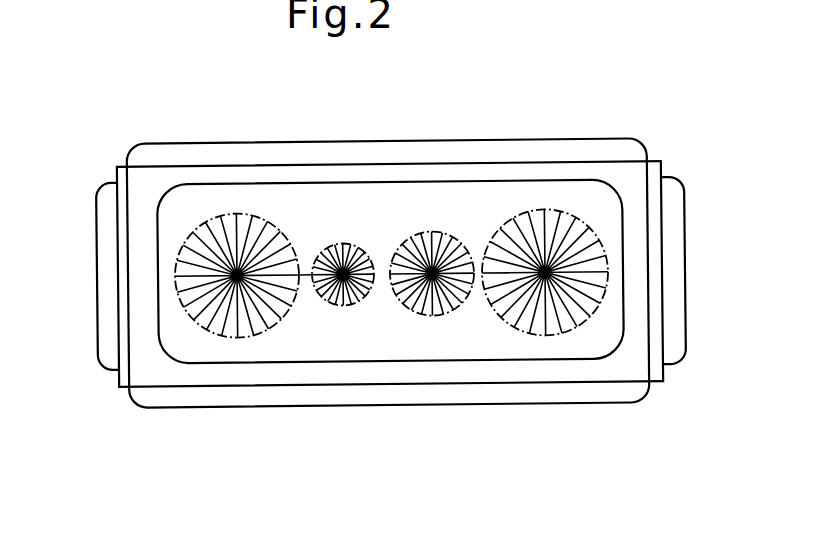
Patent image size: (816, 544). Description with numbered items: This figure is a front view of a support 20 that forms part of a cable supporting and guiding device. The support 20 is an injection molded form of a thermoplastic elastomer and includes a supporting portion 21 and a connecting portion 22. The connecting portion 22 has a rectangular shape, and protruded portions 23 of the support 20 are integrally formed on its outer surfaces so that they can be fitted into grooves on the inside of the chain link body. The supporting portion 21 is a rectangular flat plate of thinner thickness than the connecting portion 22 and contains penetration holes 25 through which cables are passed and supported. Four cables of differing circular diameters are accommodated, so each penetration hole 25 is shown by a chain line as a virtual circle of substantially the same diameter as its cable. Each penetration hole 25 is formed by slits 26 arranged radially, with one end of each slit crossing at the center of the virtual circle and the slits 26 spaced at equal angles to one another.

The support 20 is at (223, 135).
The supporting portion 21 is at (437, 197).
The connecting portion 22 is at (549, 370).
The protruded portions 23 is at (367, 150).
The penetration hole 25 is at (245, 213).
The slits 26 is at (206, 221).